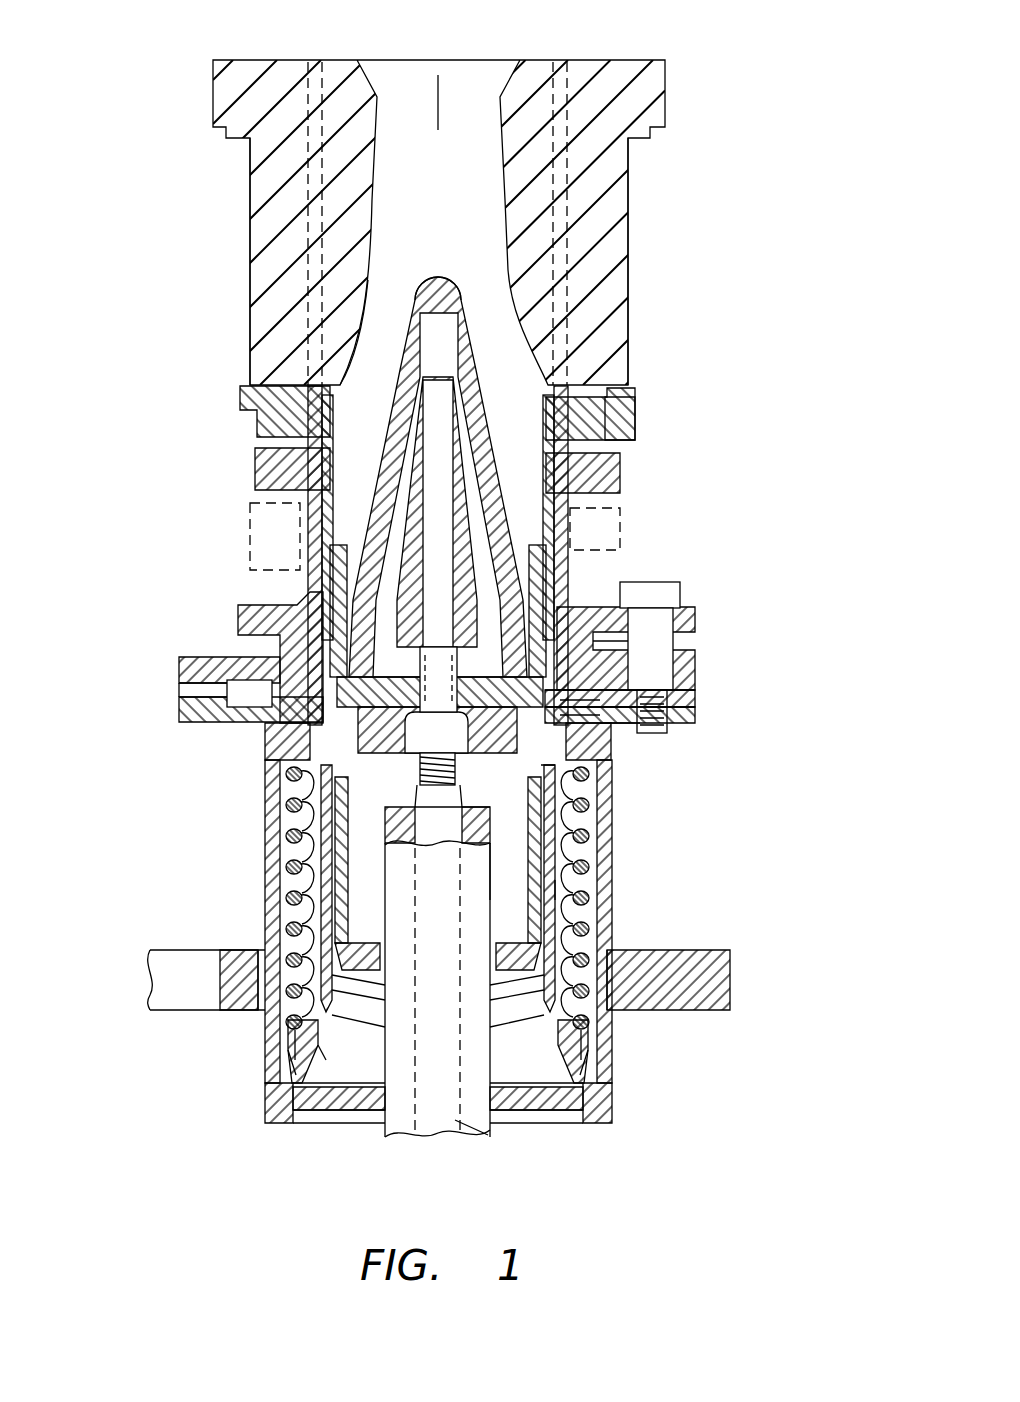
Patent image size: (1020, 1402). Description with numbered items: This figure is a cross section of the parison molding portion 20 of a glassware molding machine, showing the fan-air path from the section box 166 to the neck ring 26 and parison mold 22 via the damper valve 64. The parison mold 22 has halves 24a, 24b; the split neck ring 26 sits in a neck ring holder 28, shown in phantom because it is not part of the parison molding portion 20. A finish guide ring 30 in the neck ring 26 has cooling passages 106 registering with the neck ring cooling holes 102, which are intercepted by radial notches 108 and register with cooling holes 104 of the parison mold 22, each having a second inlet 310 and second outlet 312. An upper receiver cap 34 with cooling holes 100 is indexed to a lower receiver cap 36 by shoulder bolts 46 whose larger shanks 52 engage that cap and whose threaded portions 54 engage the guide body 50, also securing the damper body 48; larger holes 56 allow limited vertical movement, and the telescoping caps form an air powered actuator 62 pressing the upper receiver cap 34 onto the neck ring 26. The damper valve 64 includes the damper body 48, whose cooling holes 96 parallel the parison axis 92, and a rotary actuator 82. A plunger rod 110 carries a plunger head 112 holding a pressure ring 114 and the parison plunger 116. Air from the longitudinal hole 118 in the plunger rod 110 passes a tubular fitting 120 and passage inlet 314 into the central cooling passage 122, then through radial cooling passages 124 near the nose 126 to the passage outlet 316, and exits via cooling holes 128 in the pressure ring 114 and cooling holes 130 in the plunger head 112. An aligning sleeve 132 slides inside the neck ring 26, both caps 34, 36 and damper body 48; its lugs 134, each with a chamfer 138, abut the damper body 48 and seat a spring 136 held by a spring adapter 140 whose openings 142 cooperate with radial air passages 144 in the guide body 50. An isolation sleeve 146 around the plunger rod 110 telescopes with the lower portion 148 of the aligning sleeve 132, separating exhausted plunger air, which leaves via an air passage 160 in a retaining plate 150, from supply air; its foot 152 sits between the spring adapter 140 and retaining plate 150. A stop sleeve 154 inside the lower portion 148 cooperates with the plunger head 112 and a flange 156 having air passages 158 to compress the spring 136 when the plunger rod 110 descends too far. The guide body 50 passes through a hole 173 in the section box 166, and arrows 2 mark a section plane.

The parison molding portion 20 is at (735, 55).
The parison mold 22 is at (633, 181).
The parison mold half 24a is at (633, 208).
The parison mold half 24b is at (250, 188).
The split neck ring 26 is at (617, 404).
The neck ring holder 28 is at (620, 518).
The finish guide ring 30 is at (620, 463).
The upper receiver cap 34 is at (697, 620).
The lower receiver cap 36 is at (697, 668).
The shoulder bolts 46 is at (682, 585).
The damper body 48 is at (655, 728).
The guide body 50 is at (640, 735).
The larger shanks 52 is at (697, 640).
The threaded portions 54 is at (632, 758).
The larger holes 56 is at (690, 692).
The air powered actuator 62 is at (108, 598).
The damper valve 64 is at (150, 865).
The rotary actuator 82 is at (133, 808).
The parison axis 92 is at (440, 108).
The cooling holes 96 is at (653, 735).
The cooling holes 100 is at (330, 590).
The cooling holes 102 is at (290, 395).
The cooling holes 104 is at (310, 240).
The cooling passages 106 is at (280, 452).
The notches 108 is at (620, 433).
The plunger rod 110 is at (486, 1132).
The plunger head 112 is at (522, 835).
The pressure ring 114 is at (497, 787).
The parison plunger 116 is at (468, 293).
The longitudinally disposed hole 118 is at (470, 1128).
The tubular fitting 120 is at (556, 557).
The central cooling passage 122 is at (548, 400).
The radially disposed cooling passages 124 is at (561, 395).
The nose 126 is at (436, 278).
The cooling holes 128 is at (330, 645).
The cooling holes 130 is at (335, 835).
The aligning sleeve 132 is at (265, 508).
The lugs 134 is at (302, 760).
The spring 136 is at (321, 882).
The chamfer 138 is at (293, 728).
The spring adapter 140 is at (298, 1060).
The openings 142 is at (300, 1068).
The air passages 144 is at (290, 1082).
The isolation sleeve 146 is at (326, 1060).
The lower portion 148 is at (300, 852).
The retaining plate 150 is at (366, 1124).
The foot 152 is at (290, 1100).
The stop sleeve 154 is at (557, 876).
The flange 156 is at (330, 920).
The air passages 158 is at (330, 965).
The air passage 160 is at (336, 1112).
The section box 166 is at (665, 950).
The hole 173 is at (216, 982).
The section line 2 is at (139, 704).
The second inlet 310 is at (357, 385).
The second outlet 312 is at (317, 60).
The passage inlet 314 is at (297, 612).
The passage outlet 316 is at (680, 712).